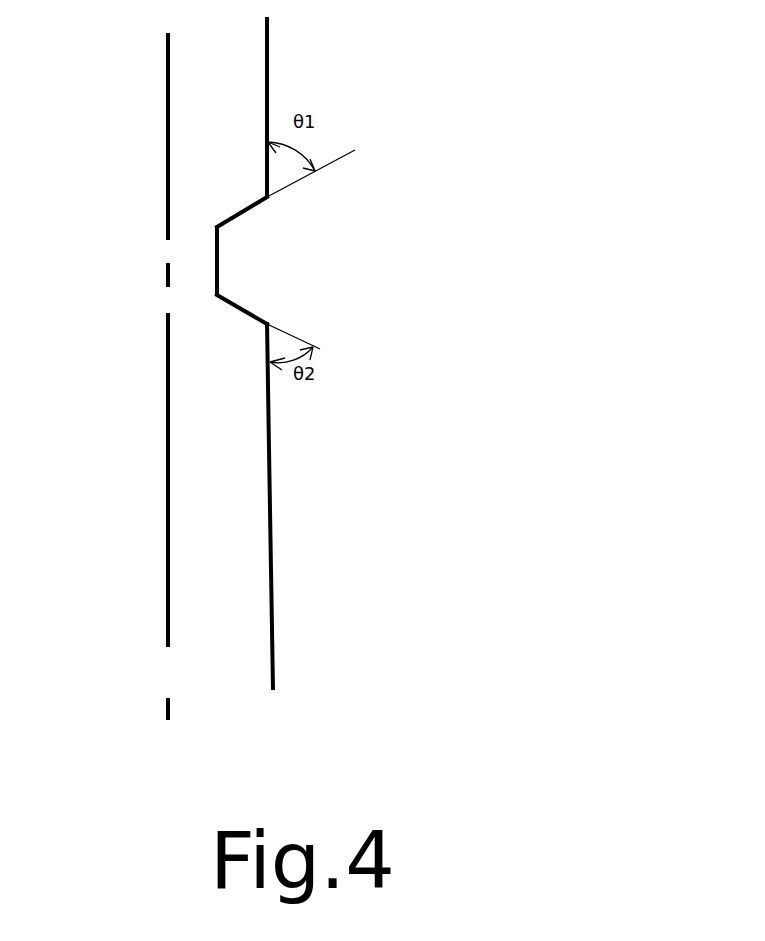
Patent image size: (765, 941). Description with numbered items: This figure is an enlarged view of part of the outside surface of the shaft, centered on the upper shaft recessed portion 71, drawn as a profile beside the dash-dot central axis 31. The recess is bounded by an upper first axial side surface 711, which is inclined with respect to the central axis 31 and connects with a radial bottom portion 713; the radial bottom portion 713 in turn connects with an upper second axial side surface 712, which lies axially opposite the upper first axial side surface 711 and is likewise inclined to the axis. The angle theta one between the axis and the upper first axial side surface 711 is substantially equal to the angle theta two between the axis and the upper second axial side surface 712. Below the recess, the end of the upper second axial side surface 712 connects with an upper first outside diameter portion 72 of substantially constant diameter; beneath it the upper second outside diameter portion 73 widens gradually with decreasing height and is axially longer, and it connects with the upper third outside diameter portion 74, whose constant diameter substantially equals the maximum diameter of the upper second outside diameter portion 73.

The central axis 31 is at (165, 113).
The upper shaft recessed portion 71 is at (431, 251).
The upper first axial side surface 711 is at (245, 212).
The upper second axial side surface 712 is at (263, 310).
The radial bottom portion 713 is at (217, 265).
The upper first outside diameter portion 72 is at (268, 388).
The upper second outside diameter portion 73 is at (270, 520).
The upper third outside diameter portion 74 is at (272, 607).